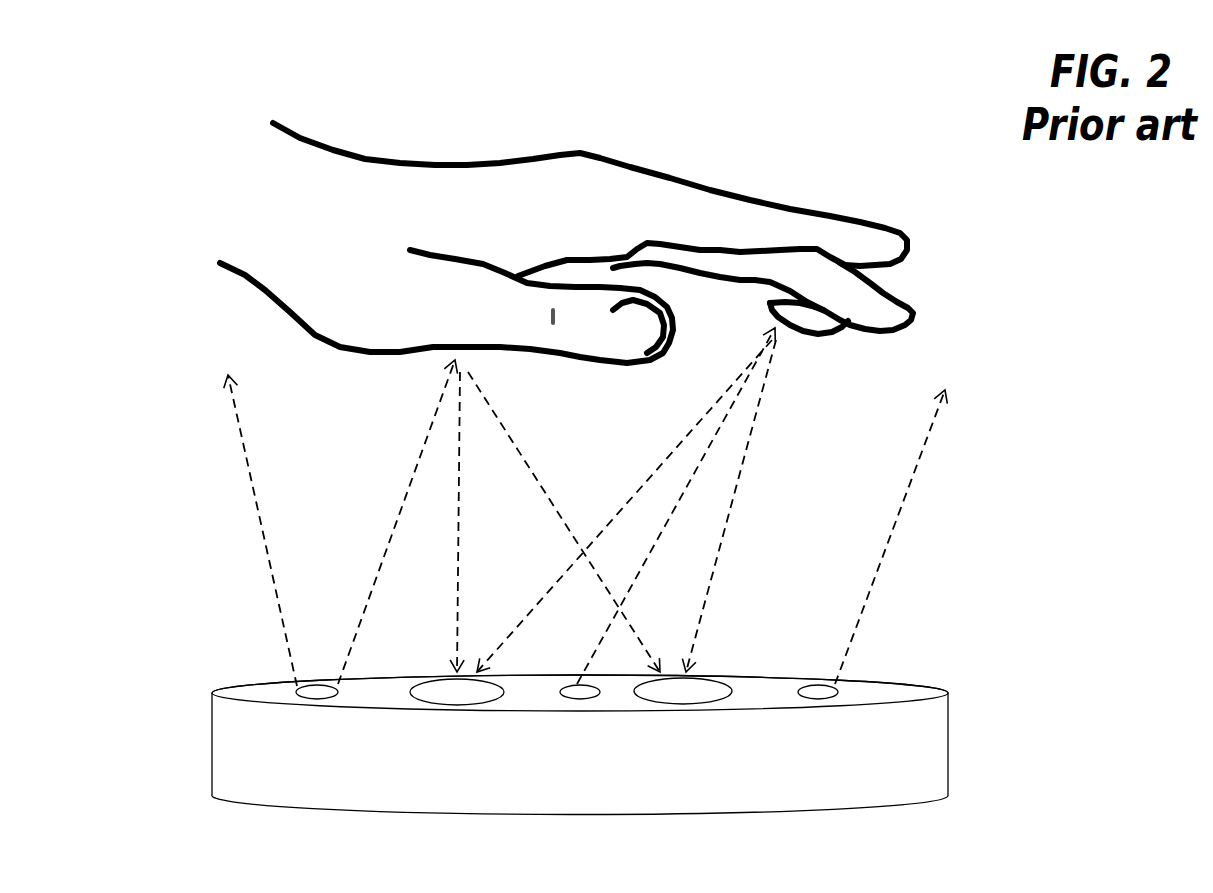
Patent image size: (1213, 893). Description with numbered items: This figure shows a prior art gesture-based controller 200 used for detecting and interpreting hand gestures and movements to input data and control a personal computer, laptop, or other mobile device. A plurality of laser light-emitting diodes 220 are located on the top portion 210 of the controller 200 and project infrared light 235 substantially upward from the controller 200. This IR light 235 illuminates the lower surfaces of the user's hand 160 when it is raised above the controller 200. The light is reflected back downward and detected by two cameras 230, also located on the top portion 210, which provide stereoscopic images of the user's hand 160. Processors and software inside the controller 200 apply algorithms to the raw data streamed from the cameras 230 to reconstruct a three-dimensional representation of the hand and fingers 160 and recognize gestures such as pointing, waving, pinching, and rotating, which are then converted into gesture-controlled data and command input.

The user's hand 160 is at (314, 223).
The gesture-based controller 200 is at (960, 765).
The top portion 210 is at (920, 680).
The laser light-emitting diodes 220 is at (317, 715).
The cameras 230 is at (492, 763).
The infrared light 235 is at (935, 477).